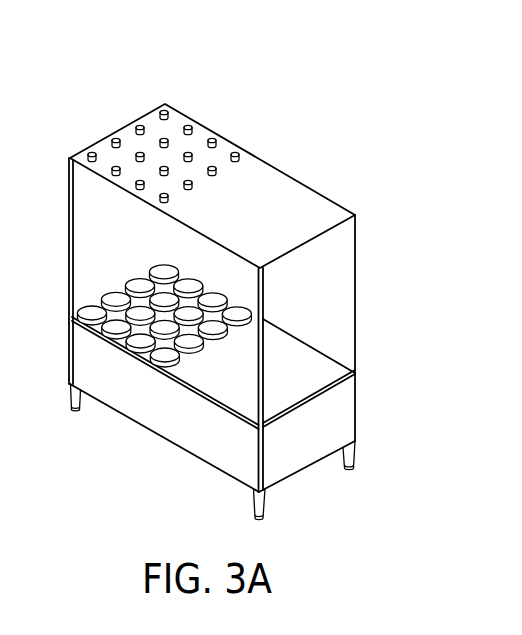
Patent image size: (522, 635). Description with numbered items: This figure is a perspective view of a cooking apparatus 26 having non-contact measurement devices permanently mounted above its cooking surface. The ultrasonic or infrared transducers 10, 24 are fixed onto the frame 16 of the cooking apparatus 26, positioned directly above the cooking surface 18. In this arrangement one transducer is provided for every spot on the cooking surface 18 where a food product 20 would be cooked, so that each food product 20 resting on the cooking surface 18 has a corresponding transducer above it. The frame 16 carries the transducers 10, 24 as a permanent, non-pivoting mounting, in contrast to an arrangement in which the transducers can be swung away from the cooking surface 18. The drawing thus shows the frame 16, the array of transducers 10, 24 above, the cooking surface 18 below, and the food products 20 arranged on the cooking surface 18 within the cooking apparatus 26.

The ultrasonic transducer 10 is at (116, 133).
The infrared transducer 24 is at (163, 156).
The frame 16 is at (68, 225).
The cooking surface 18 is at (300, 342).
The food product 20 is at (135, 282).
The cooking apparatus 26 is at (184, 276).